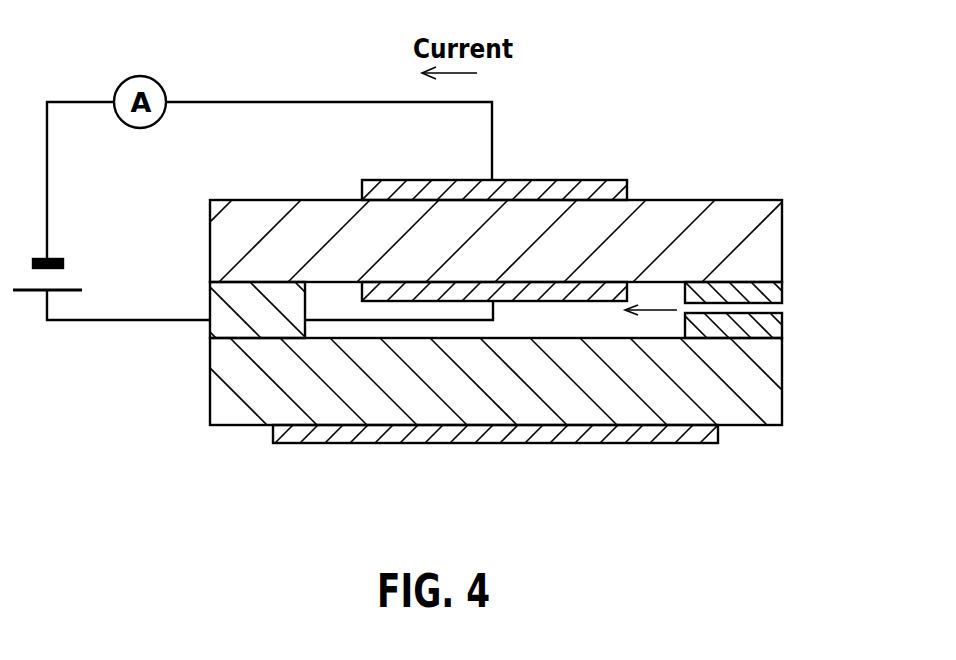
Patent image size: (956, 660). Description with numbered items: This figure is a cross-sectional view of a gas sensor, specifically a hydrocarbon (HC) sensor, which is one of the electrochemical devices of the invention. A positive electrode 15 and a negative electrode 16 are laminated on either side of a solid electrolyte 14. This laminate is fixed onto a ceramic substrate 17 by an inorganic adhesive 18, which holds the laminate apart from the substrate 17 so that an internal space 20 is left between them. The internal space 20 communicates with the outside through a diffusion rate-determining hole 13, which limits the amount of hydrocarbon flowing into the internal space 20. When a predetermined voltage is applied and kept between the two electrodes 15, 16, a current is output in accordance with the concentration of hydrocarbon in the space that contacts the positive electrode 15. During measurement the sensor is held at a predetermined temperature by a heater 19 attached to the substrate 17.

The diffusion rate-determining hole 13 is at (784, 306).
The solid electrolyte 14 is at (736, 204).
The positive electrode 15 is at (551, 290).
The negative electrode 16 is at (556, 191).
The substrate 17 is at (746, 414).
The inorganic adhesive 18 is at (212, 326).
The heater 19 is at (446, 436).
The internal space 20 is at (609, 325).